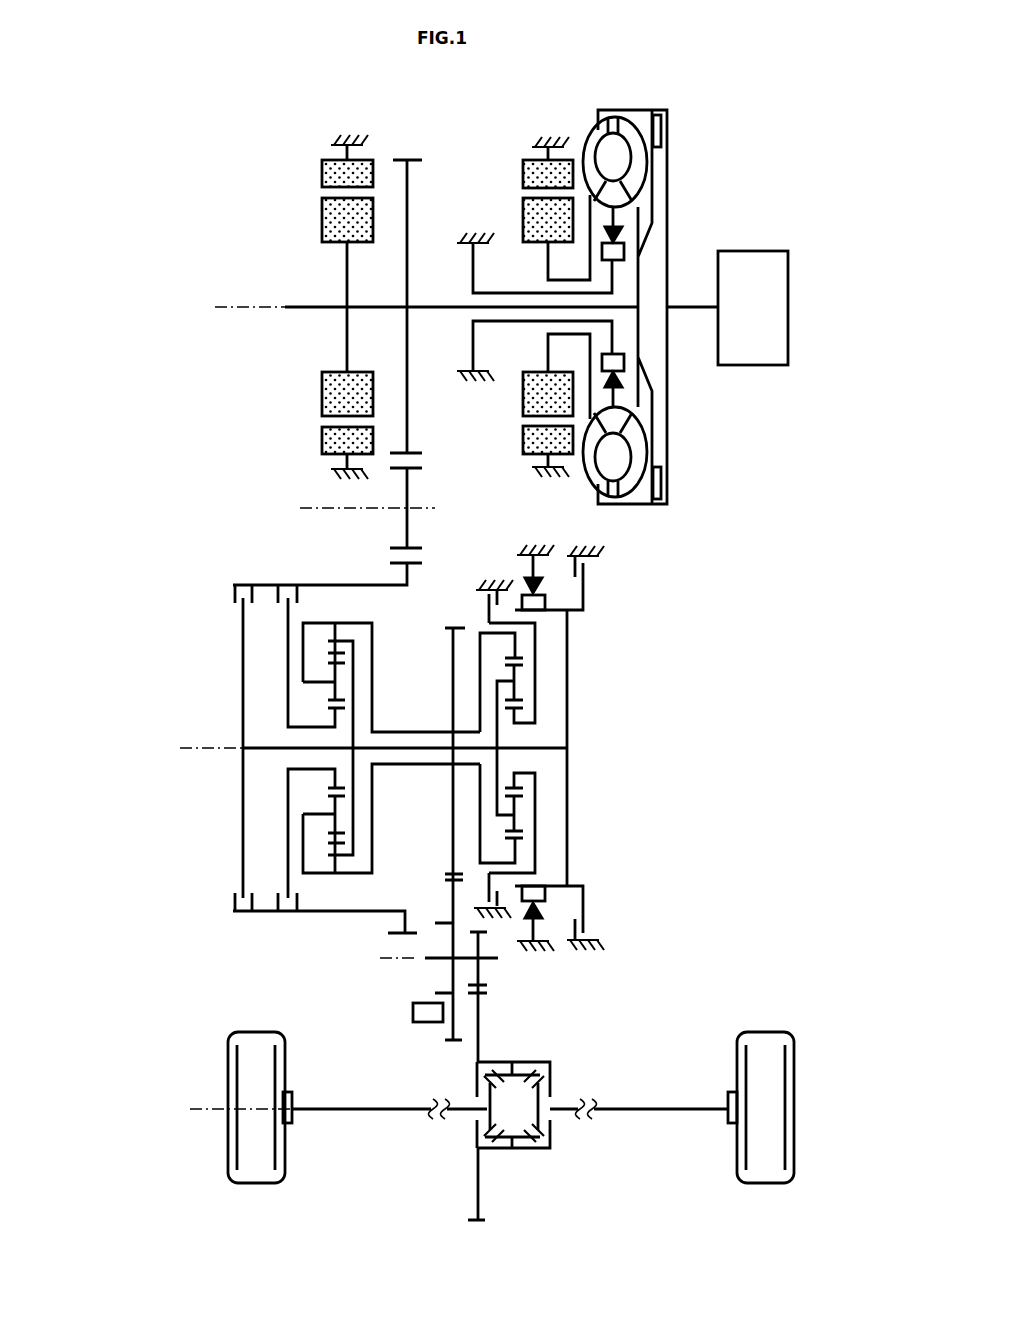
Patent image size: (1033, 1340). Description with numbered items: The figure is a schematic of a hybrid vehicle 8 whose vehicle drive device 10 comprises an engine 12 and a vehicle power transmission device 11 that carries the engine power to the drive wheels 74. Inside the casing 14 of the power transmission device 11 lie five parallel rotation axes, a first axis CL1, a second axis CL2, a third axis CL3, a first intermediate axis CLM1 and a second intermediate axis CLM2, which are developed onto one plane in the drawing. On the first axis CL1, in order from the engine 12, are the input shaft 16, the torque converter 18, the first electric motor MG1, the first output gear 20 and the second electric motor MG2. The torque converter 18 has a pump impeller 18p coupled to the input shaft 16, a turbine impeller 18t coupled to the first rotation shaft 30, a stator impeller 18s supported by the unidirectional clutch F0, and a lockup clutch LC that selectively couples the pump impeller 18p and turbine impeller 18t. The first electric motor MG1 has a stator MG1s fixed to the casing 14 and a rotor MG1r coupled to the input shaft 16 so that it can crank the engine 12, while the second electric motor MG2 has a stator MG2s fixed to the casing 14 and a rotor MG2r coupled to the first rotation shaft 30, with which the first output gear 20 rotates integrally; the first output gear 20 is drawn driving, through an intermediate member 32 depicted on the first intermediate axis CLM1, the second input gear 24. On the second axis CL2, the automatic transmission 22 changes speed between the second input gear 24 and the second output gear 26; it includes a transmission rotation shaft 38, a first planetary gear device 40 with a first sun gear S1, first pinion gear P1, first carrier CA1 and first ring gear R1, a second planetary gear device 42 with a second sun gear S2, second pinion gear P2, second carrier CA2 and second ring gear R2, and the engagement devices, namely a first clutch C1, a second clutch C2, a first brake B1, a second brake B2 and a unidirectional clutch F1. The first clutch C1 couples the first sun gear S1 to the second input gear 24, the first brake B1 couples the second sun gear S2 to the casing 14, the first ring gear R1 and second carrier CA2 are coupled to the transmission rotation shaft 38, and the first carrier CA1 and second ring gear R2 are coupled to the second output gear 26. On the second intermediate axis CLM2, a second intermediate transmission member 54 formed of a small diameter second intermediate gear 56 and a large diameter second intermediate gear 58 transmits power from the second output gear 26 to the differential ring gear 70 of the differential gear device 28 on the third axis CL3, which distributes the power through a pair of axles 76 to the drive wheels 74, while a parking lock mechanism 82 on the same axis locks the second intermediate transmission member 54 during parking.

The hybrid vehicle 8 is at (116, 95).
The vehicle drive device 10 is at (780, 174).
The vehicle power transmission device 11 is at (232, 232).
The engine 12 is at (776, 253).
The casing 14 is at (345, 134).
The input shaft 16 is at (690, 306).
The torque converter 18 is at (598, 95).
The pump impeller 18p is at (592, 145).
The turbine impeller 18t is at (622, 125).
The stator impeller 18s is at (606, 200).
The lockup clutch LC is at (657, 128).
The unidirectional clutch F0 is at (614, 261).
The first electric motor MG1 is at (516, 158).
The stator of first electric motor MG1s is at (523, 175).
The rotor of first electric motor MG1r is at (523, 215).
The second electric motor MG2 is at (318, 158).
The stator of second electric motor MG2s is at (322, 175).
The rotor of second electric motor MG2r is at (322, 215).
The first output gear 20 is at (410, 433).
The automatic transmission 22 is at (650, 600).
The second input gear 24 is at (400, 572).
The second output gear 26 is at (451, 853).
The differential gear device 28 is at (552, 1048).
The first rotation shaft 30 is at (392, 306).
The gear 32 is at (410, 483).
The transmission rotation shaft 38 is at (258, 750).
The first planetary gear device 40 is at (358, 636).
The second planetary gear device 42 is at (545, 668).
The second intermediate transmission member 54 is at (520, 963).
The small diameter second intermediate gear 56 is at (482, 972).
The large diameter second intermediate gear 58 is at (451, 890).
The differential ring gear 70 is at (482, 1015).
The drive wheels 74 is at (246, 1032).
The axles 76 is at (365, 1110).
The parking lock mechanism 82 is at (418, 1016).
The first clutch C1 is at (298, 603).
The second clutch C2 is at (233, 602).
The first brake B1 is at (486, 598).
The second brake B2 is at (586, 578).
The unidirectional clutch F1 is at (540, 580).
The first ring gear R1 is at (333, 641).
The first pinion gear P1 is at (331, 658).
The first carrier CA1 is at (328, 690).
The first sun gear S1 is at (330, 712).
The second ring gear R2 is at (512, 660).
The second pinion gear P2 is at (522, 698).
The second carrier CA2 is at (497, 683).
The second sun gear S2 is at (514, 720).
The first axis CL1 is at (230, 307).
The second axis CL2 is at (180, 748).
The third axis CL3 is at (192, 1109).
The first intermediate axis CLM1 is at (312, 509).
The second intermediate axis CLM2 is at (362, 960).